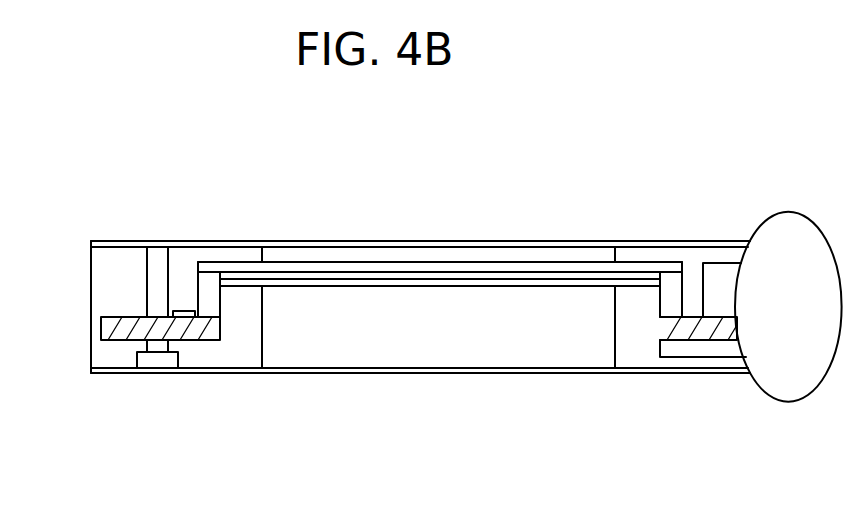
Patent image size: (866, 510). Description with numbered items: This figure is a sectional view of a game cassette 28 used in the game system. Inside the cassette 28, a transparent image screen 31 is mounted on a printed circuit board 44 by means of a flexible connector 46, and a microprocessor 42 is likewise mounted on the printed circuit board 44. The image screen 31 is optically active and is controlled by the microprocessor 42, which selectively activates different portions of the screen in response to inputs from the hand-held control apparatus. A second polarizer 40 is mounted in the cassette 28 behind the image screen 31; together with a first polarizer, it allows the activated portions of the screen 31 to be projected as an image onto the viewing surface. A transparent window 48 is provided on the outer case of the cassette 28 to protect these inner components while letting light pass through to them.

The cassette 28 is at (631, 175).
The transparent image screen 31 is at (288, 270).
The second polarizer 40 is at (365, 286).
The microprocessor 42 is at (182, 311).
The printed circuit board 44 is at (120, 319).
The flexible connector 46 is at (213, 303).
The transparent window 48 is at (407, 242).